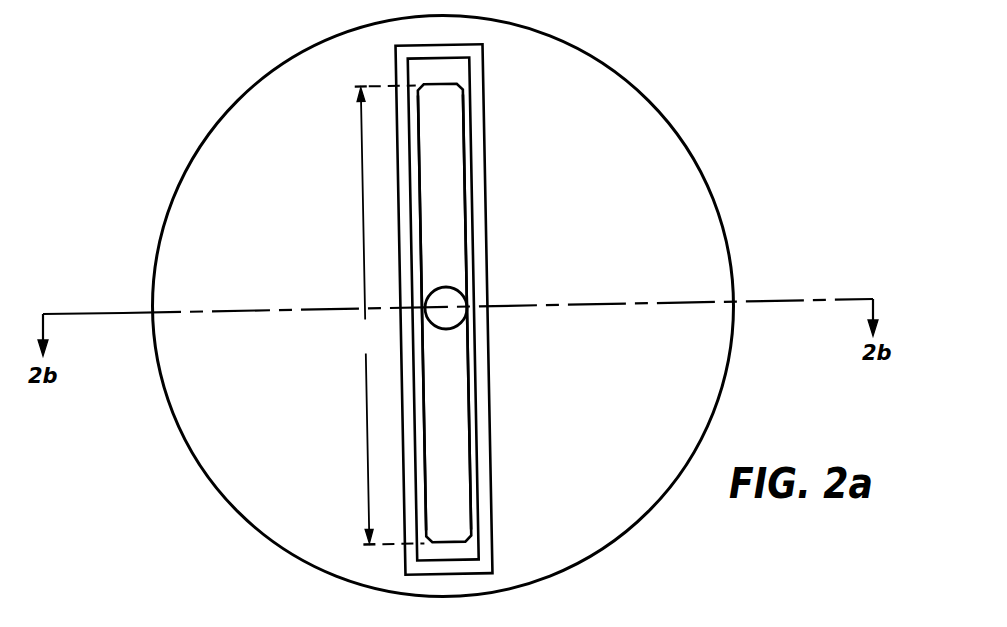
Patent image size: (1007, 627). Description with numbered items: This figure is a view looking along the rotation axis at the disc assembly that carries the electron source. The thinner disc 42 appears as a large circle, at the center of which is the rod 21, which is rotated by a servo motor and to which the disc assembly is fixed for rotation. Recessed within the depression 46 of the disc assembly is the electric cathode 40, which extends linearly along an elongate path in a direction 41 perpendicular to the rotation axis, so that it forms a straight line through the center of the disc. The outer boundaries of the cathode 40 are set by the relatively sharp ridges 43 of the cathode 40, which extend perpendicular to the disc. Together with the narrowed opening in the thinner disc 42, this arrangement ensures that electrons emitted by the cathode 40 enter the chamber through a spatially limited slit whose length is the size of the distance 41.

The rod 21 is at (459, 320).
The electric cathode 40 is at (455, 188).
The direction of cathode elongation 41 is at (386, 314).
The thinner disc 42 is at (654, 104).
The sharp ridges 43 is at (420, 151).
The depression 46 is at (477, 384).